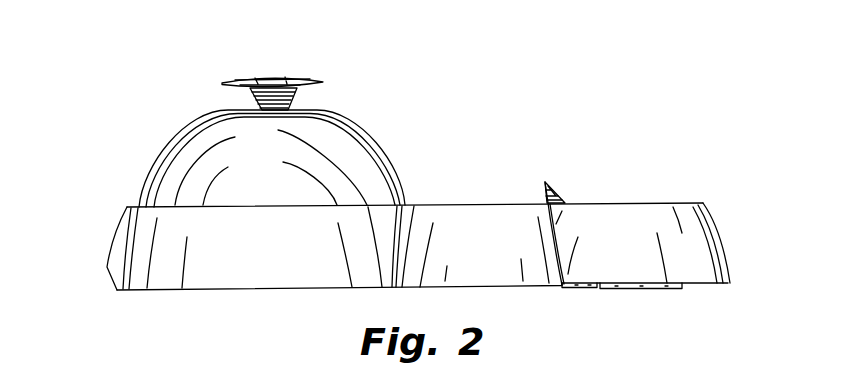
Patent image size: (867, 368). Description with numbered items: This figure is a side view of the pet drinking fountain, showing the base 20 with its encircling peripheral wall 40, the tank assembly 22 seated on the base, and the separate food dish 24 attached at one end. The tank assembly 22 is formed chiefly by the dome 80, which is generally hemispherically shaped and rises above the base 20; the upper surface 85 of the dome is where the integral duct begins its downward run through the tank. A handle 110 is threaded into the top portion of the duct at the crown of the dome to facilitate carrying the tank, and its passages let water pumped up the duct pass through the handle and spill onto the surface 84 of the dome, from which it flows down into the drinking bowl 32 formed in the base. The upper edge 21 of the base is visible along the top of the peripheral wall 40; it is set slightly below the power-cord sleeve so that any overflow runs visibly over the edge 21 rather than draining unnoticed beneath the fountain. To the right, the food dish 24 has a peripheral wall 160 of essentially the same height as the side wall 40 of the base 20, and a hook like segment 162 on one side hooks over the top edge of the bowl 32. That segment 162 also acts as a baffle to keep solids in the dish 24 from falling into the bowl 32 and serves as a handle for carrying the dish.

The base 20 is at (468, 172).
The edge of the base 21 is at (126, 207).
The tank assembly 22 is at (393, 167).
The food dish 24 is at (658, 202).
The drinking bowl 32 is at (495, 203).
The peripheral wall 40 is at (121, 226).
The dome 80 is at (175, 141).
The surface of the dome 84 is at (357, 133).
The upper surface 85 is at (226, 111).
The handle 110 is at (237, 78).
The peripheral wall of the dish 160 is at (717, 230).
The hook like segment 162 is at (552, 190).